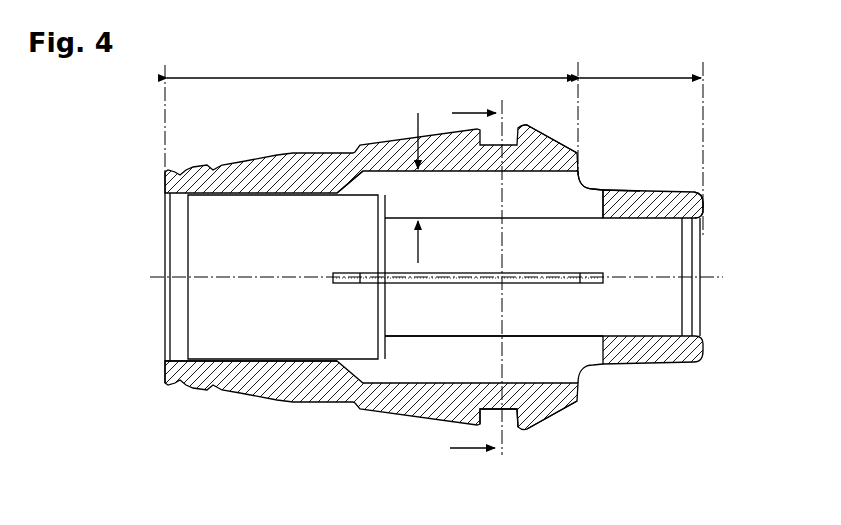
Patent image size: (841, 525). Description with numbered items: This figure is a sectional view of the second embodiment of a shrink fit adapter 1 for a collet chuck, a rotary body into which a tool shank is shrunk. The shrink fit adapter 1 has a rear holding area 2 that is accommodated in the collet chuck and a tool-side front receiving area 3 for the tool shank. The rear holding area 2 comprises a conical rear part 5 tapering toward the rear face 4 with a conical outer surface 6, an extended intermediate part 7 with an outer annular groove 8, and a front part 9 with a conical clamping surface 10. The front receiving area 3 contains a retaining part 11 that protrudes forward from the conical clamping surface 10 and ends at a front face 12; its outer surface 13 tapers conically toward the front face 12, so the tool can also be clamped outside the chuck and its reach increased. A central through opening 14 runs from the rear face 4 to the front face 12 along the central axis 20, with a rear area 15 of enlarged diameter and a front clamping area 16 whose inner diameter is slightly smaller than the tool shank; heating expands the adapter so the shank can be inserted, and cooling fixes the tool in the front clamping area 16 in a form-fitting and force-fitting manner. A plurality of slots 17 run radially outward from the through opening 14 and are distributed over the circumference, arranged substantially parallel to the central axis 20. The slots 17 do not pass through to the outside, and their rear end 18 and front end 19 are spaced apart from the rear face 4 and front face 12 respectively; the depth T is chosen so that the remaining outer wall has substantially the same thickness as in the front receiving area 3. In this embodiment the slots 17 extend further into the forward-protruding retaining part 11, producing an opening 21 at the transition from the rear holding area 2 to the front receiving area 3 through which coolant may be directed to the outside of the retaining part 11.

The shrink fit adapter 1 is at (146, 423).
The rear holding area 2 is at (335, 78).
The front receiving area 3 is at (630, 78).
The rear face 4 is at (163, 183).
The conical rear part 5 is at (285, 177).
The conical outer surface 6 is at (275, 398).
The intermediate part 7 is at (493, 170).
The annular groove 8 is at (507, 410).
The front part 9 is at (545, 150).
The conical clamping surface 10 is at (560, 412).
The retaining part 11 is at (660, 207).
The front face 12 is at (705, 202).
The conical outer surface 13 is at (652, 367).
The through opening 14 is at (650, 305).
The rear area 15 is at (238, 362).
The front clamping area 16 is at (448, 337).
The slot 17 is at (393, 183).
The rear end of slot 18 is at (337, 185).
The front end of slot 19 is at (603, 188).
The central axis 20 is at (255, 272).
The opening 21 is at (585, 178).